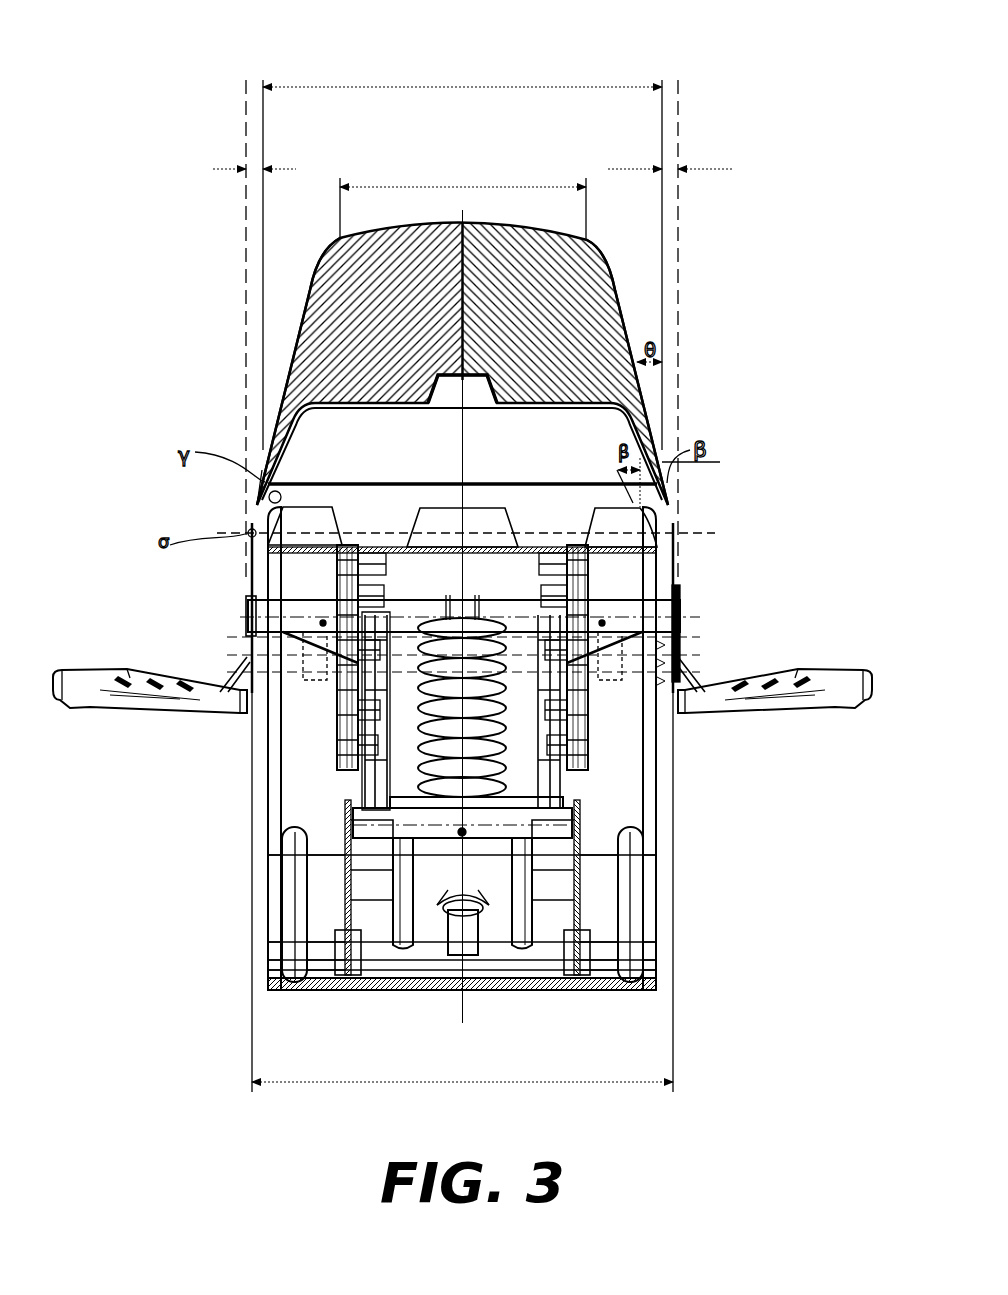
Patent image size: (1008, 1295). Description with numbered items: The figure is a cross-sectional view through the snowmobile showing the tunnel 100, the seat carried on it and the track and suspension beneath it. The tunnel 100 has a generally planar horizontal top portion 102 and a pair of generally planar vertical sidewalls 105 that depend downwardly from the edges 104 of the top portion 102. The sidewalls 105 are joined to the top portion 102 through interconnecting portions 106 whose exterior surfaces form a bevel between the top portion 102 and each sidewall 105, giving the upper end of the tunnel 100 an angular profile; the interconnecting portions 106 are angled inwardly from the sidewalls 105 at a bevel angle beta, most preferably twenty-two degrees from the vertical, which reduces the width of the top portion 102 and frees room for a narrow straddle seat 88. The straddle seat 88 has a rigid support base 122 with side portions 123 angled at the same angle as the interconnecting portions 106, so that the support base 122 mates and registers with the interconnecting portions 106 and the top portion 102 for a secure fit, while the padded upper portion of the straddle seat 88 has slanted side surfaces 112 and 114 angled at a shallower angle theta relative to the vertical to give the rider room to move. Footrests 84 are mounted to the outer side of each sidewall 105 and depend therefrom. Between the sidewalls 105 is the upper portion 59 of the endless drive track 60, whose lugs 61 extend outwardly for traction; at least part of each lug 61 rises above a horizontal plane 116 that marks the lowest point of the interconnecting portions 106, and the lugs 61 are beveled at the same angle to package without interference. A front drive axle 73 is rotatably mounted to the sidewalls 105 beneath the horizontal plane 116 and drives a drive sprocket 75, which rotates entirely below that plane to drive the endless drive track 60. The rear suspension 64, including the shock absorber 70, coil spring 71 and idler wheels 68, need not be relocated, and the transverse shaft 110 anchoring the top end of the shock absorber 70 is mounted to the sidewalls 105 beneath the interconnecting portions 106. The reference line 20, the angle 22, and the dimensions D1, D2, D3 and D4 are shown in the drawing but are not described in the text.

The horizontal reference line 20 is at (708, 463).
The angle 22 is at (667, 485).
The upper portion of the endless drive track 59 is at (543, 545).
The endless drive track 60 is at (642, 992).
The lugs 61 is at (275, 510).
The rear suspension 64 is at (313, 797).
The idler wheels 68 is at (630, 898).
The shock absorber 70 is at (480, 897).
The coil spring 71 is at (505, 768).
The front drive axle 73 is at (285, 672).
The drive sprocket 75 is at (340, 750).
The footrests 84 is at (73, 683).
The straddle seat 88 is at (592, 317).
The tunnel 100 is at (355, 483).
The top portion 102 is at (413, 483).
The edges of the top portion 104 is at (265, 477).
The sidewalls 105 is at (250, 587).
The interconnecting portions 106 is at (250, 527).
The transverse shaft 110 is at (660, 623).
The slanted side surface 112 is at (613, 278).
The slanted side surface 114 is at (312, 285).
The horizontal plane 116 is at (712, 536).
The support base 122 is at (347, 393).
The side portions 123 is at (277, 418).
The top width D1 is at (513, 187).
The overall width D2 is at (513, 87).
The body width D3 is at (312, 1085).
The offset D4 is at (212, 169).